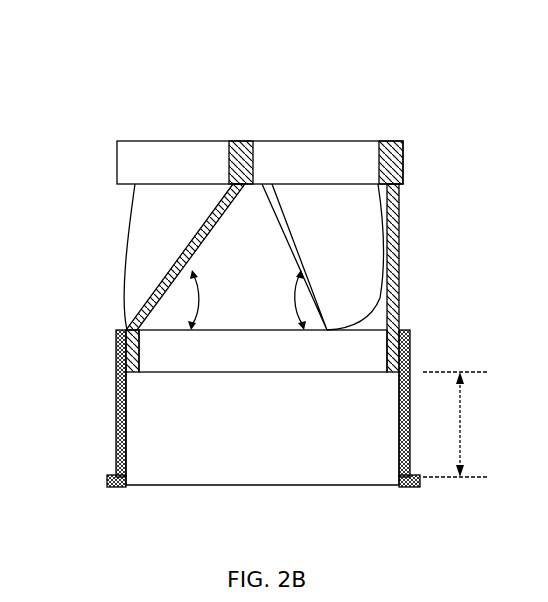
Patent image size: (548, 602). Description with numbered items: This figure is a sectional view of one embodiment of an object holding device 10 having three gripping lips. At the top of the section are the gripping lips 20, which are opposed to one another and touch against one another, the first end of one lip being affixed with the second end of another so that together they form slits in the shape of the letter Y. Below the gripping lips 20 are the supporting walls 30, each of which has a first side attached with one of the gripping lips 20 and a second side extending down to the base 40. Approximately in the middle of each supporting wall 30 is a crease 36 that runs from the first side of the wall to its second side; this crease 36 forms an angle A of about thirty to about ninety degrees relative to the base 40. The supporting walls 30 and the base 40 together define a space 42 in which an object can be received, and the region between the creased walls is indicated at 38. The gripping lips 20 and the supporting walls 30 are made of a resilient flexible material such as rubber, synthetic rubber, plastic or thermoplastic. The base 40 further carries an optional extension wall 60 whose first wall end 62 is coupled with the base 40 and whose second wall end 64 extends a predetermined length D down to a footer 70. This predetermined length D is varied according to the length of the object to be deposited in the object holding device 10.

The object holding device 10 is at (301, 74).
The gripping lips 20 is at (151, 147).
The supporting walls 30 is at (162, 205).
The crease 36 is at (175, 285).
The cavity between arms 38 is at (266, 277).
The base 40 is at (373, 343).
The space 42 is at (248, 303).
The extension wall 60 is at (116, 413).
The first wall end 62 is at (118, 366).
The second wall end 64 is at (114, 470).
The footer 70 is at (107, 478).
The angle A is at (190, 318).
The predetermined length D is at (462, 426).